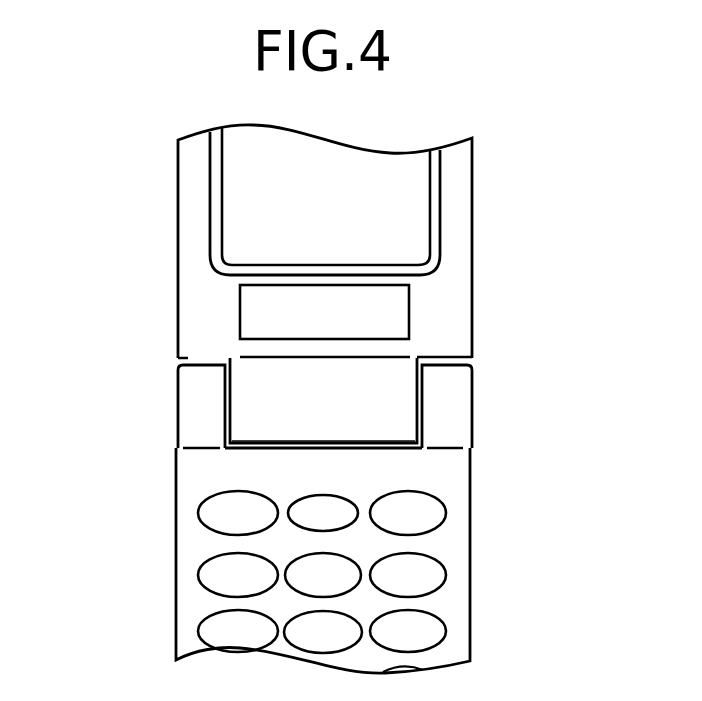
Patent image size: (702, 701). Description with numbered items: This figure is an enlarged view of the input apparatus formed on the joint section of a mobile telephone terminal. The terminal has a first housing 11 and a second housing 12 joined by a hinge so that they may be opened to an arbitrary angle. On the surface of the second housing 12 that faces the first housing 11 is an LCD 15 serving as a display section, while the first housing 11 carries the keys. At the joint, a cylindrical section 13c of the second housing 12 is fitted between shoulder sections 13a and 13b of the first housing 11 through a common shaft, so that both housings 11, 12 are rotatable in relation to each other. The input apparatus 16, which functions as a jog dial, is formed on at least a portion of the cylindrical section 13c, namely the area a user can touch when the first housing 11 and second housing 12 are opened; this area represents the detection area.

The first housing 11 is at (470, 538).
The second housing 12 is at (472, 263).
The shoulder section 13a is at (177, 378).
The shoulder section 13b is at (472, 380).
The cylindrical section 13c is at (290, 420).
The LCD 15 is at (237, 195).
The input apparatus 16 is at (370, 418).